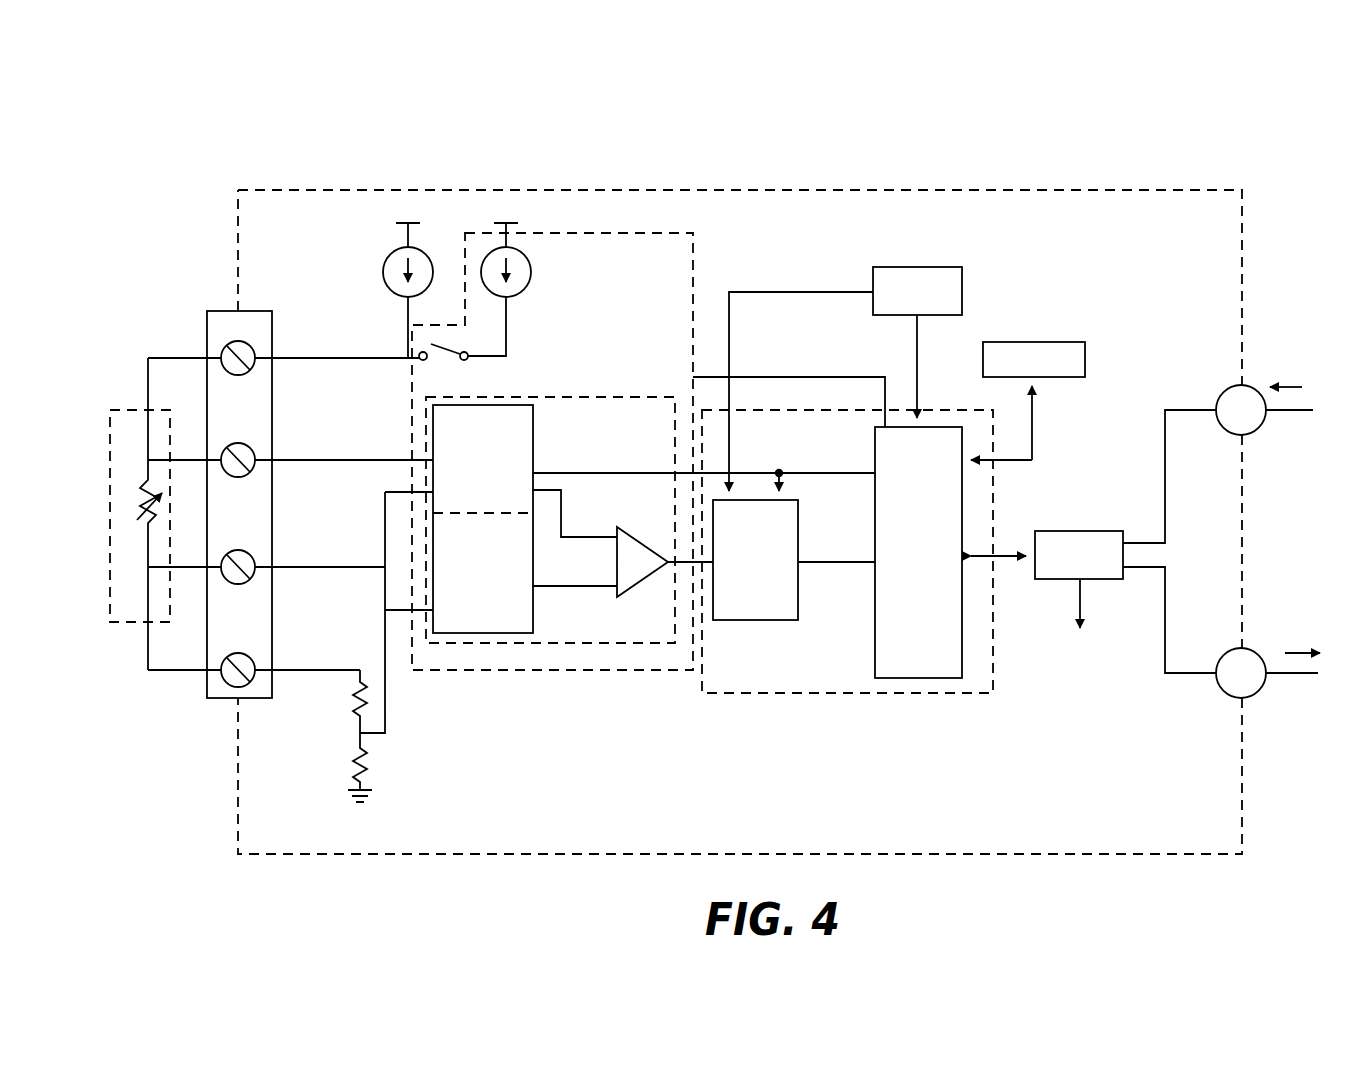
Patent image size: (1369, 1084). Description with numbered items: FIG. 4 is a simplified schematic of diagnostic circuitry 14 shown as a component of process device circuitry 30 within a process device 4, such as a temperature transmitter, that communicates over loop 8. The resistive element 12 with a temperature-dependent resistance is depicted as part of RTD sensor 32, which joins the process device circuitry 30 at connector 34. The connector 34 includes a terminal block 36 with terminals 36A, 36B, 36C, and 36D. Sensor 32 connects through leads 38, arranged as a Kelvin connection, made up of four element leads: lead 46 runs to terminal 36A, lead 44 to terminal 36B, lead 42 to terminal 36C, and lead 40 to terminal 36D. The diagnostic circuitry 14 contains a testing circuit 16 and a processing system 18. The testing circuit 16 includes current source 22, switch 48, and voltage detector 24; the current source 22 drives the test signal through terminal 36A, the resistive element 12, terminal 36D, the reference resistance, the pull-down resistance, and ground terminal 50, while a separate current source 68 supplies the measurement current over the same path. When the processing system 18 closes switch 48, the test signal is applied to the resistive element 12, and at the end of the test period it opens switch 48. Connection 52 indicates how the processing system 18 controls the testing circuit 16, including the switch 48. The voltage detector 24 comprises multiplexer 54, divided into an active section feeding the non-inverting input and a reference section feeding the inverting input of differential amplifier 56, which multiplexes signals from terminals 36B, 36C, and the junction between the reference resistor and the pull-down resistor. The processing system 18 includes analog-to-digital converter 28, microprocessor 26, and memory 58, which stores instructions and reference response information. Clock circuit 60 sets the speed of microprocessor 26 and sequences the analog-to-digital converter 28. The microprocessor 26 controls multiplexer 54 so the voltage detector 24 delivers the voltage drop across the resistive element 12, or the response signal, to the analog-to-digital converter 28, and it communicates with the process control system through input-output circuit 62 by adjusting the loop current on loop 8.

The process device 4 is at (1150, 133).
The loop 8 is at (1285, 410).
The resistive element 12 is at (123, 510).
The diagnostic circuitry 14 is at (775, 693).
The testing circuit 16 is at (649, 233).
The processing system 18 is at (803, 693).
The current source 22 is at (527, 253).
The voltage detector 24 is at (468, 643).
The microprocessor 26 is at (913, 678).
The analog-to-digital converter 28 is at (798, 610).
The process device circuitry 30 is at (1005, 190).
The RTD sensor 32 is at (133, 622).
The connector 34 is at (228, 303).
The terminal block 36 is at (228, 699).
The terminal 36A is at (238, 349).
The terminal 36B is at (238, 452).
The terminal 36C is at (239, 559).
The terminal 36D is at (239, 662).
The leads 38 is at (142, 380).
The lead 40 is at (152, 662).
The lead 42 is at (176, 565).
The lead 44 is at (175, 458).
The lead 46 is at (195, 356).
The switch 48 is at (455, 350).
The ground terminal 50 is at (372, 797).
The connection 52 is at (765, 377).
The multiplexer 54 is at (533, 457).
The differential amplifier 56 is at (636, 585).
The memory 58 is at (1040, 342).
The clock circuit 60 is at (932, 267).
The input-output circuit 62 is at (1065, 531).
The current source 68 is at (386, 270).